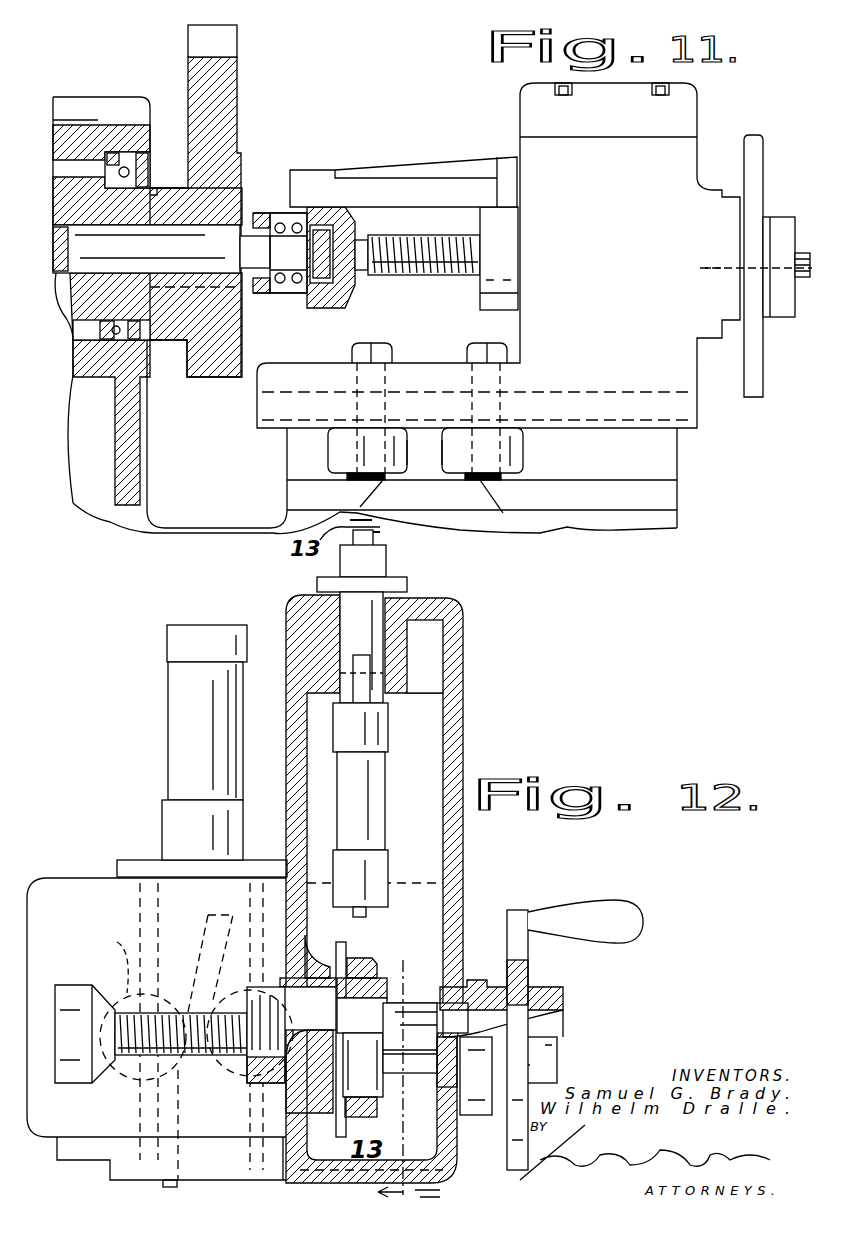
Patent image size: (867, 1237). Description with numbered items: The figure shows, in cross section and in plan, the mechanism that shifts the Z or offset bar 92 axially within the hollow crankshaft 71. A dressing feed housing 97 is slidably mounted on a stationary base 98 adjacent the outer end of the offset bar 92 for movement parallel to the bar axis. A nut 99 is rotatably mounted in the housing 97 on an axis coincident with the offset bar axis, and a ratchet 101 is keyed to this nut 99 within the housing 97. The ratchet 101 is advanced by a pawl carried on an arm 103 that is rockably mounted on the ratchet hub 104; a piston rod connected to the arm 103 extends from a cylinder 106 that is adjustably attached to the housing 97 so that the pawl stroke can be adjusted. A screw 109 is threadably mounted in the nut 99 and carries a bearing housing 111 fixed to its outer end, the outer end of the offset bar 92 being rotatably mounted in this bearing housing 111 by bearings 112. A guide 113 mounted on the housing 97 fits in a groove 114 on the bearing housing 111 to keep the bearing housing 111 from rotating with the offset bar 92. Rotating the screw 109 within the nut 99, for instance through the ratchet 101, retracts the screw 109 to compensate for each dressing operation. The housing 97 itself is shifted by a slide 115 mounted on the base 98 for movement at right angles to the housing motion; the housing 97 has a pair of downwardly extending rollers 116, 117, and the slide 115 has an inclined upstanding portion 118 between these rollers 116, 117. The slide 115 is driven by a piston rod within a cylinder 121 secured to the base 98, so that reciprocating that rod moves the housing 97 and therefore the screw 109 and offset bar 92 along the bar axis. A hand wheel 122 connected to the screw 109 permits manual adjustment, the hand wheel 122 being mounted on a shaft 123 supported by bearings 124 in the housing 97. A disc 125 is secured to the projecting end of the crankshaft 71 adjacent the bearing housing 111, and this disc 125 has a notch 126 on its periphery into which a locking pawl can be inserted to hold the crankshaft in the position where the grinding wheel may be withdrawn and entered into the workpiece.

In FIG. 11, the hollow crankshaft 71 is at (213, 207).
In FIG. 11, the Z or offset bar 92 is at (357, 315).
In FIG. 11, the dressing feed housing 97 is at (643, 198).
In FIG. 12, the dressing feed housing 97 is at (457, 735).
In FIG. 11, the stationary base 98 is at (660, 460).
In FIG. 11, the nut 99 is at (518, 248).
In FIG. 12, the nut 99 is at (298, 1000).
In FIG. 12, the ratchet 101 is at (348, 953).
In FIG. 12, the arm 103 is at (370, 958).
In FIG. 12, the ratchet hub 104 is at (380, 980).
In FIG. 12, the cylinder 106 is at (375, 815).
In FIG. 11, the screw 109 is at (397, 272).
In FIG. 12, the screw 109 is at (190, 1060).
In FIG. 11, the bearing housing 111 is at (318, 207).
In FIG. 11, the bearings 112 is at (290, 300).
In FIG. 11, the guide 113 is at (410, 168).
In FIG. 11, the groove 114 is at (275, 207).
In FIG. 12, the groove 114 is at (233, 1073).
In FIG. 11, the slide 115 is at (485, 512).
In FIG. 11, the roller 116 is at (328, 445).
In FIG. 12, the roller 116 is at (110, 961).
In FIG. 11, the roller 117 is at (523, 458).
In FIG. 11, the inclined upstanding portion 118 is at (420, 447).
In FIG. 12, the inclined upstanding portion 118 is at (207, 927).
In FIG. 12, the cylinder 121 is at (180, 718).
In FIG. 11, the hand wheel 122 is at (755, 135).
In FIG. 12, the hand wheel 122 is at (532, 977).
In FIG. 12, the shaft 123 is at (537, 1031).
In FIG. 12, the bearings 124 is at (470, 972).
In FIG. 11, the disc 125 is at (215, 97).
In FIG. 11, the notch 126 is at (195, 37).